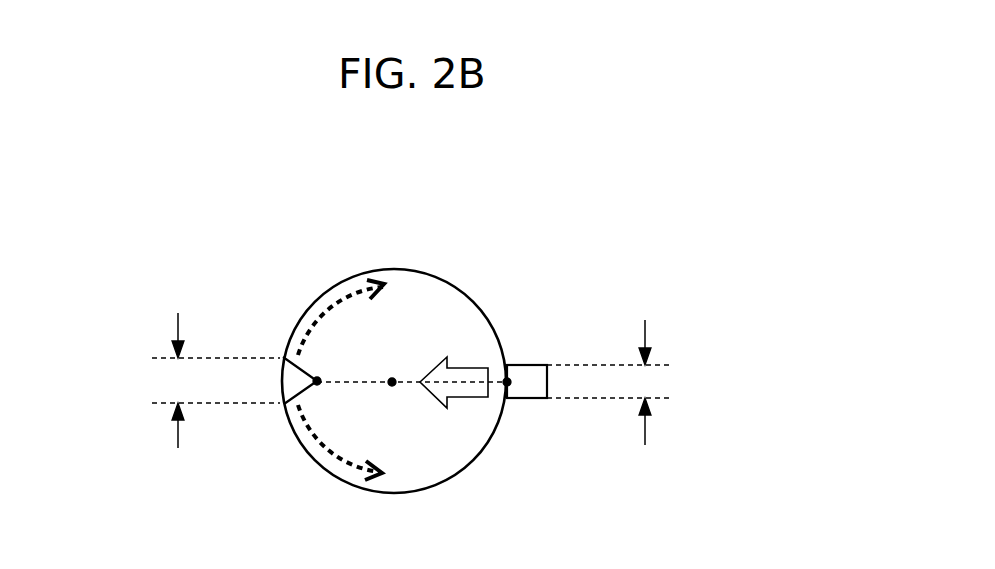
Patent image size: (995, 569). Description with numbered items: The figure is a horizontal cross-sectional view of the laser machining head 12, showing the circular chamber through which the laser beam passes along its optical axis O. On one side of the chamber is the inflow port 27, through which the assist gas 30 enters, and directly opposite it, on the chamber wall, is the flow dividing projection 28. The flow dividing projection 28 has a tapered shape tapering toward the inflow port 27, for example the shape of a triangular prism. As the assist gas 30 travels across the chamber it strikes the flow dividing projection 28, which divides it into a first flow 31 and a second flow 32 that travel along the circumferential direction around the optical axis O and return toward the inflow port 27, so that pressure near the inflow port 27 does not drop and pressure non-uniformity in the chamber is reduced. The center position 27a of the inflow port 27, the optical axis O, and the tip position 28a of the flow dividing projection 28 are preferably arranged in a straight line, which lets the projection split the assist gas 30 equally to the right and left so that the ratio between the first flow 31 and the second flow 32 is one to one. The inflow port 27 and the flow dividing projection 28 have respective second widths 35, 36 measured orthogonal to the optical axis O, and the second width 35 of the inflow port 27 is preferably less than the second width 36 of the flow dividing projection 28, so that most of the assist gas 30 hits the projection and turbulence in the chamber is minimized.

The laser machining head 12 is at (552, 222).
The inflow port 27 is at (523, 398).
The center position of the inflow port 27a is at (507, 383).
The flow dividing projection 28 is at (292, 416).
The tip position of the flow dividing projection 28a is at (317, 381).
The assist gas 30 is at (466, 373).
The first flow 31 is at (335, 305).
The second flow 32 is at (318, 447).
The second width of the inflow port 35 is at (645, 333).
The second width of the flow dividing projection 36 is at (178, 322).
The optical axis of the laser beam O is at (392, 382).